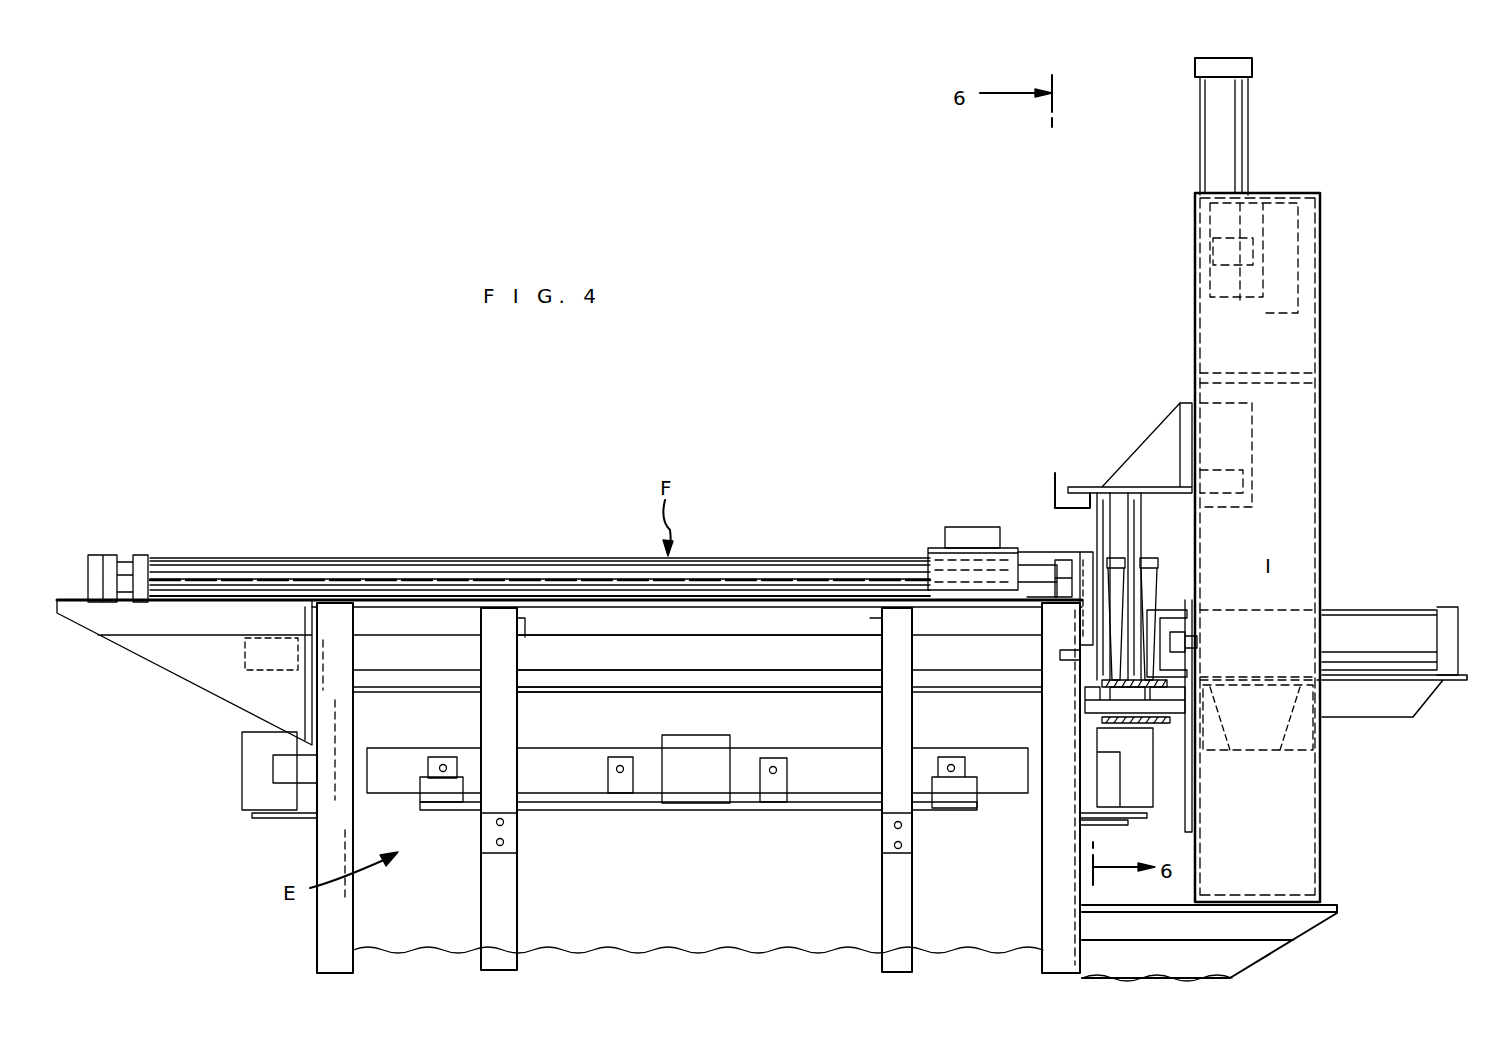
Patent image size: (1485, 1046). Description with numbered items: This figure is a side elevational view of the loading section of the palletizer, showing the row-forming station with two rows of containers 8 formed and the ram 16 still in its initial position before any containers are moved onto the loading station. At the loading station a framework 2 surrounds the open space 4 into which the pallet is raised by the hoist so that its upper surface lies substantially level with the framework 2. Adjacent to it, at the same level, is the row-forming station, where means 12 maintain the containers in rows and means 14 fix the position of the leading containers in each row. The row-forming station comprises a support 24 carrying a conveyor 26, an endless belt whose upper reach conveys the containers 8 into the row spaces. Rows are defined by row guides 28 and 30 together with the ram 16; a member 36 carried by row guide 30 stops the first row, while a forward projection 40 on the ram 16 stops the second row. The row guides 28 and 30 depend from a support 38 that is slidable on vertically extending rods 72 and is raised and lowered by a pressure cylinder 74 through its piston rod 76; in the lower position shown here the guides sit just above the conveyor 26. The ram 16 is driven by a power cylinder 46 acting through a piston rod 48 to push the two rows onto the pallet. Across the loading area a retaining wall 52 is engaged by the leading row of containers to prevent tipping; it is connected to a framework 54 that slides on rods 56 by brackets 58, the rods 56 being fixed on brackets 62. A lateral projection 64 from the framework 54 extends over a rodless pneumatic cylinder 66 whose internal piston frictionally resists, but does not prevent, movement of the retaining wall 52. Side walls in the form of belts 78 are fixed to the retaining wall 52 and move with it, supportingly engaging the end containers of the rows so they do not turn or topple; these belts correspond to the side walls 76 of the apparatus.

The framework 2 is at (415, 693).
The open space 4 is at (363, 688).
The containers 8 is at (1145, 592).
The row-maintaining means 12 is at (1082, 528).
The position-fixing means 14 is at (1116, 776).
The ram 16 is at (1175, 640).
The support 24 is at (1190, 740).
The conveyor 26 is at (1160, 720).
The row guide 28 is at (1130, 552).
The row guide 30 is at (1110, 545).
The stop member 36 is at (1045, 710).
The support 38 is at (1140, 450).
The forward projection 40 is at (1145, 595).
The power cylinder 46 is at (1365, 612).
The piston rod 48 is at (1215, 700).
The retaining wall 52 is at (1100, 668).
The framework 54 is at (128, 575).
The rods 56 is at (165, 575).
The brackets 58 is at (930, 570).
The brackets 62 is at (1060, 570).
The lateral projection 64 is at (960, 540).
The rodless pneumatic cylinder 66 is at (228, 565).
The vertically extending rods 72 is at (1225, 355).
The pressure cylinder 74 is at (1215, 115).
The piston rod 76 is at (826, 683).
The belts 78 is at (806, 663).